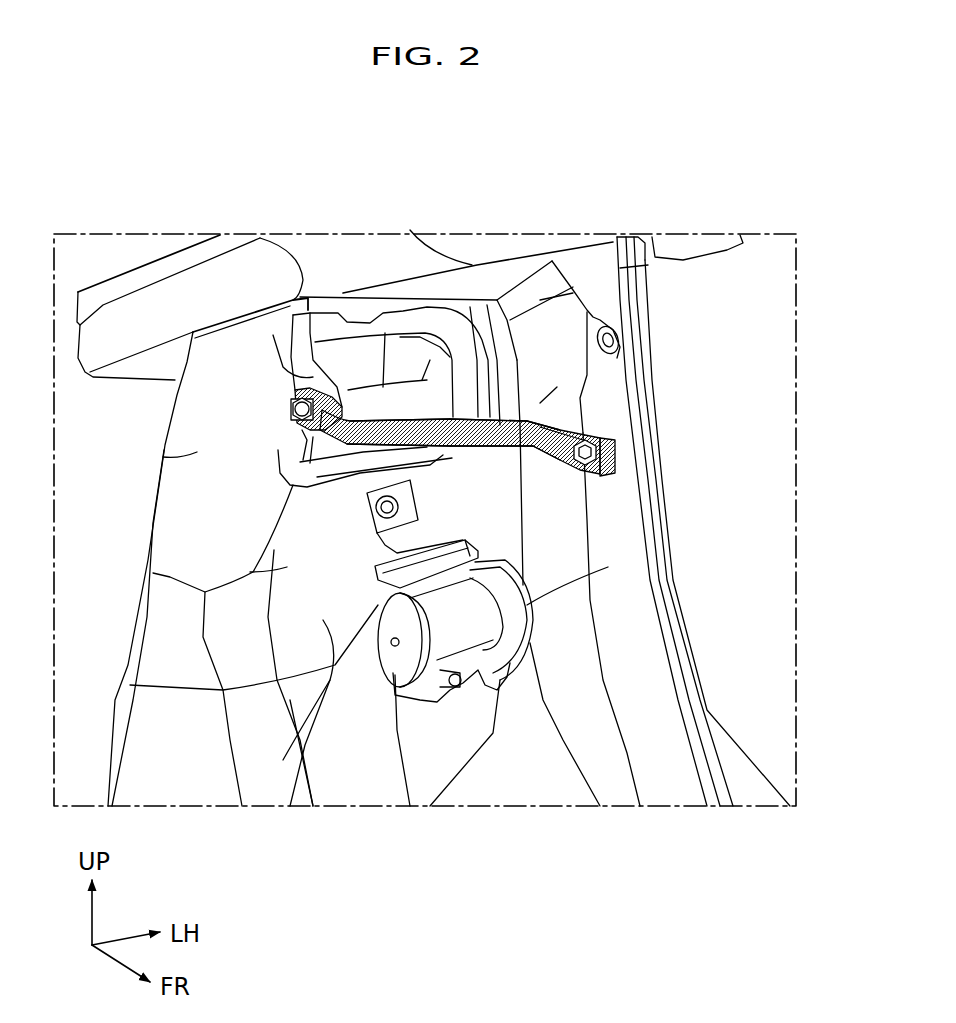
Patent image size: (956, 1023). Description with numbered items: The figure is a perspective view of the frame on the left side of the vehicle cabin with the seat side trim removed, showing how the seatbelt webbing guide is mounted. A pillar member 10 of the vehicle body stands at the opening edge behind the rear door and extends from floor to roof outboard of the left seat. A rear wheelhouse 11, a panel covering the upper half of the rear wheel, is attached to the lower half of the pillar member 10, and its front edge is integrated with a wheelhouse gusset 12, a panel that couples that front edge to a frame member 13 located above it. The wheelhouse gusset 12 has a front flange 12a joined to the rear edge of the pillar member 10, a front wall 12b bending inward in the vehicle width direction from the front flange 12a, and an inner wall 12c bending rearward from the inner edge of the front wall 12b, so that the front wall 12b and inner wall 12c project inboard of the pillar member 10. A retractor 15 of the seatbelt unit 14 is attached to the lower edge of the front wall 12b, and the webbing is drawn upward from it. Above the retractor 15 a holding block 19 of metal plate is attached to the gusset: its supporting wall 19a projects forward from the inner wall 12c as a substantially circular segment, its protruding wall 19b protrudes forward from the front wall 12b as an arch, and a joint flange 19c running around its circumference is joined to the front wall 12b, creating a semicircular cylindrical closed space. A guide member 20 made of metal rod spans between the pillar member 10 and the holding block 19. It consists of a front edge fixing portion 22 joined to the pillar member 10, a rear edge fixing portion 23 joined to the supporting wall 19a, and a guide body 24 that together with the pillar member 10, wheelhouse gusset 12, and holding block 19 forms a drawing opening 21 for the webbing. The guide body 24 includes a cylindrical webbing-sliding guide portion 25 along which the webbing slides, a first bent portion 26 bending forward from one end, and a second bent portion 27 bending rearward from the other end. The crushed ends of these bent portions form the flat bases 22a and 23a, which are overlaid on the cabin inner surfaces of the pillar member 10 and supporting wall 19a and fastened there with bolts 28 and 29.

The pillar member 10 is at (617, 400).
The rear wheelhouse 11 is at (348, 793).
The wheelhouse gusset 12 is at (250, 572).
The front flange 12a is at (573, 593).
The front wall 12b is at (330, 680).
The inner wall 12c is at (163, 457).
The frame member 13 is at (197, 275).
The seatbelt unit 14 is at (520, 572).
The retractor 15 is at (420, 695).
The holding block 19 is at (332, 335).
The supporting wall 19a is at (273, 335).
The protruding wall 19b is at (383, 333).
The joint flange 19c is at (405, 315).
The guide member 20 is at (533, 416).
The drawing opening 21 is at (428, 407).
The front edge fixing portion 22 is at (600, 438).
The base 22a is at (657, 444).
The rear edge fixing portion 23 is at (293, 392).
The base 23a is at (206, 306).
The guide body 24 is at (456, 474).
The webbing-sliding guide portion 25 is at (455, 447).
The first bent portion 26 is at (583, 447).
The second bent portion 27 is at (337, 446).
The bolt 28 is at (585, 468).
The bolt 29 is at (292, 413).